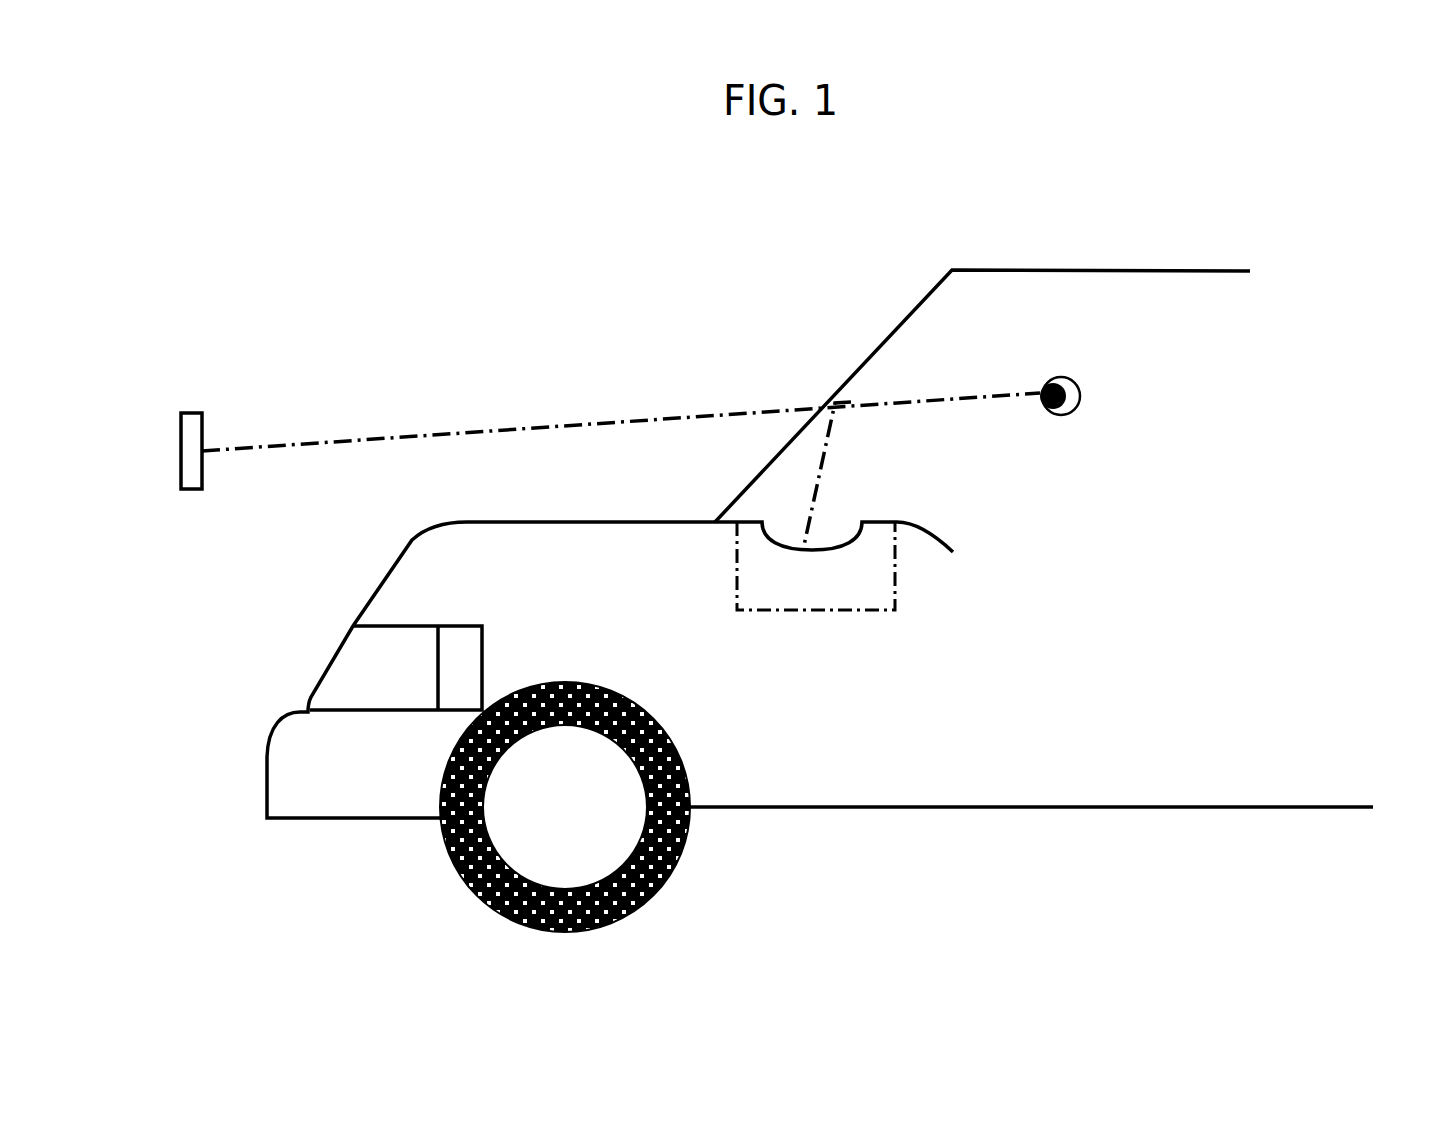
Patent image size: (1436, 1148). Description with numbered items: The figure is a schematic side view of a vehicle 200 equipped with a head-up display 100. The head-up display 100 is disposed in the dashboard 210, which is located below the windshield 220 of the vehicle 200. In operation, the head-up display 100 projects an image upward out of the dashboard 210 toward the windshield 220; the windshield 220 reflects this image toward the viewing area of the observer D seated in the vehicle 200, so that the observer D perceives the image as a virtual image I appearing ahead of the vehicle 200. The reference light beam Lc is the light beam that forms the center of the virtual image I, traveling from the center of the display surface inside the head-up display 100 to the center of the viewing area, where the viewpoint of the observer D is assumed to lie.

The head-up display 100 is at (830, 612).
The vehicle 200 is at (333, 820).
The dashboard 210 is at (923, 525).
The windshield 220 is at (922, 297).
The virtual image I is at (190, 413).
The observer D is at (1077, 383).
The reference light beam Lc is at (817, 477).